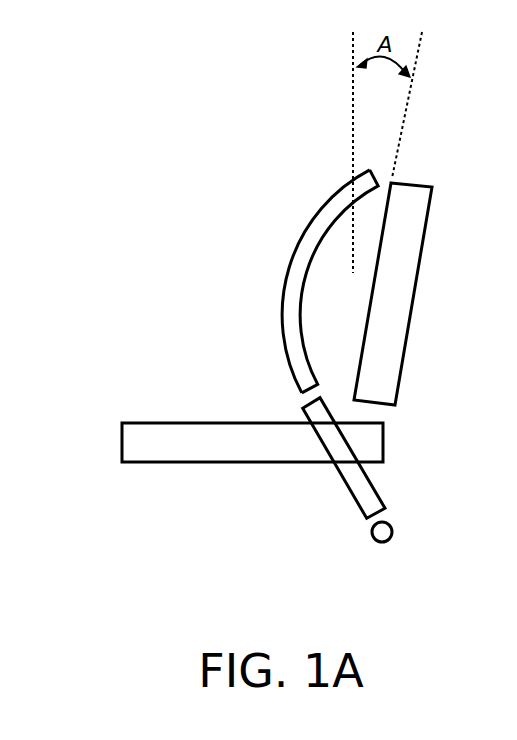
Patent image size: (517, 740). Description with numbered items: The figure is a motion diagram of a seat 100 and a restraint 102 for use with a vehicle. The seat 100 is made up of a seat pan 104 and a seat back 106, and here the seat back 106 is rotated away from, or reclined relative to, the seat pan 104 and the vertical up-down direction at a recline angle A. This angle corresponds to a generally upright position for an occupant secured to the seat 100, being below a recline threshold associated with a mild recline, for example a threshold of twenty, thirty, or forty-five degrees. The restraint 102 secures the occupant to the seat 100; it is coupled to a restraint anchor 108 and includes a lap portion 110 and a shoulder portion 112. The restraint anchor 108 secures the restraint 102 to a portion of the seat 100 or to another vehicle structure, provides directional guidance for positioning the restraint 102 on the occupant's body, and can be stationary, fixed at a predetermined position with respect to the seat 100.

The seat 100 is at (153, 405).
The restraint 102 is at (260, 238).
The seat pan 104 is at (122, 448).
The seat back 106 is at (432, 188).
The restraint anchor 108 is at (372, 532).
The lap portion 110 is at (373, 482).
The shoulder portion 112 is at (284, 287).